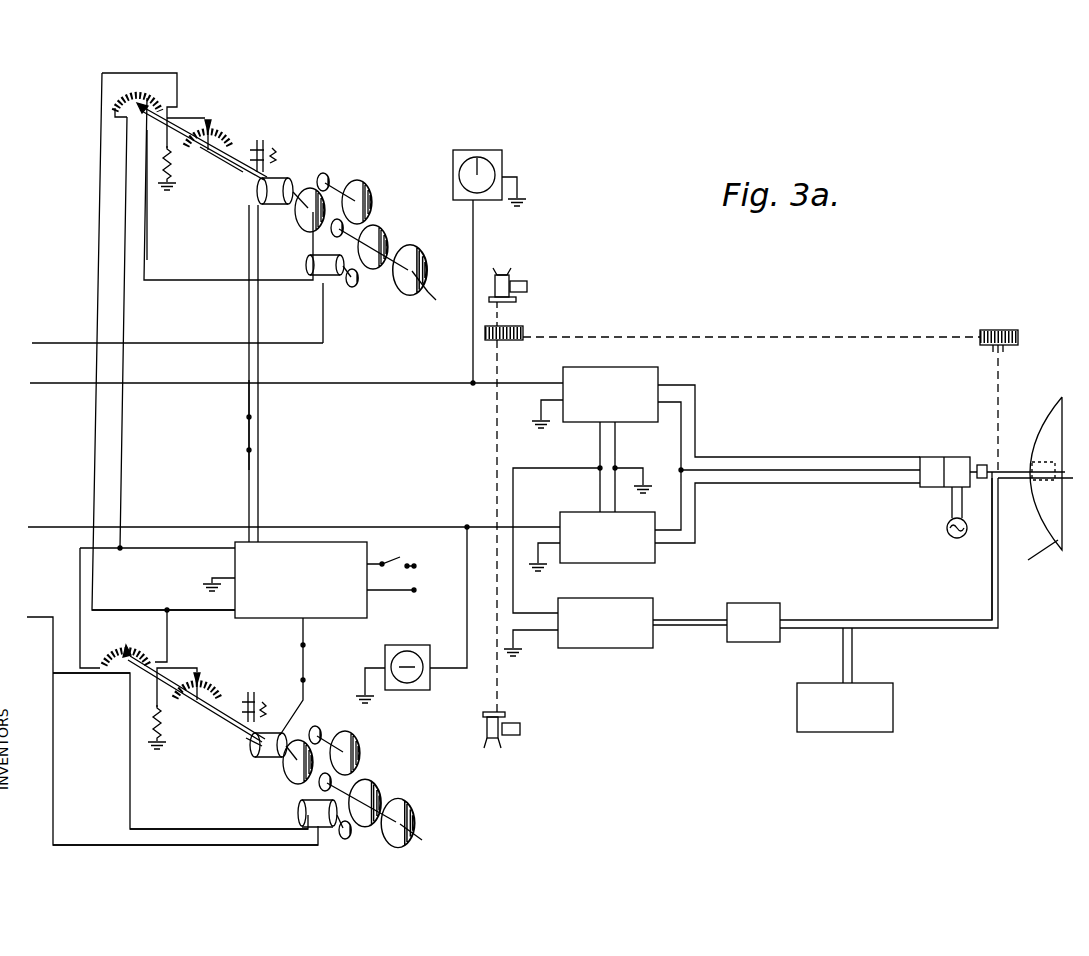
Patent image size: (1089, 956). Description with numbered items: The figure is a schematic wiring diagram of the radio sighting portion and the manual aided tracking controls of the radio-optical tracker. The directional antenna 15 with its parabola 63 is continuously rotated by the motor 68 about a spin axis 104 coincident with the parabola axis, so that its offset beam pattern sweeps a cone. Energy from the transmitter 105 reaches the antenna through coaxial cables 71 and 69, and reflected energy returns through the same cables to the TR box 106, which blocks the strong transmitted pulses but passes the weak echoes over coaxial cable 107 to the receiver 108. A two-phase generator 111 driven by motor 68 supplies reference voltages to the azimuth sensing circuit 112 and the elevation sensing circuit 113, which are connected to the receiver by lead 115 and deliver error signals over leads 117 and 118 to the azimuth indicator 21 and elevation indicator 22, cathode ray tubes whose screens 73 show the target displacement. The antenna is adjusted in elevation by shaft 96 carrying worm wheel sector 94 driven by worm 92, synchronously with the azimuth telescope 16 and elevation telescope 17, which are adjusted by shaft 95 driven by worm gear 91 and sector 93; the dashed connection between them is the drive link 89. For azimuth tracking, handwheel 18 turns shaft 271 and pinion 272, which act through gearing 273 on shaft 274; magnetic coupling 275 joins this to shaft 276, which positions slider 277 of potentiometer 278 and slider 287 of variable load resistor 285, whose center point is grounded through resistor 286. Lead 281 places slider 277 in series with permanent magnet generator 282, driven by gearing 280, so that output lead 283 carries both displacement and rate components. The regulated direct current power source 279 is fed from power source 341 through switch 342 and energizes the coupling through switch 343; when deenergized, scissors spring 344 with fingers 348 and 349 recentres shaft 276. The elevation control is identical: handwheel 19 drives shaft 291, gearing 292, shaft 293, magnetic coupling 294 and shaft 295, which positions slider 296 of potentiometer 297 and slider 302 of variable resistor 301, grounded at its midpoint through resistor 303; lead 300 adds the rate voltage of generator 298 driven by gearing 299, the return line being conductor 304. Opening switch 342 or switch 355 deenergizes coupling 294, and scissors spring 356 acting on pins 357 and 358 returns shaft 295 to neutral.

The potentiometer 278 is at (114, 106).
The potentiometer slider 277 is at (138, 106).
The variable resistor 285 is at (208, 124).
The slider 287 is at (212, 135).
The projecting finger 349 is at (259, 140).
The projecting finger 348 is at (266, 150).
The magnetic coupling 275 is at (282, 180).
The shaft 274 is at (312, 188).
The gearing 273 is at (352, 190).
The pinion 272 is at (373, 225).
The shaft 271 is at (405, 246).
The resistor 286 is at (175, 162).
The shaft 276 is at (244, 172).
The scissors spring 344 is at (253, 208).
The lead 281 is at (148, 236).
The permanent magnet generator 282 is at (310, 262).
The gearing 280 is at (375, 280).
The azimuth tracking handwheel 18 is at (428, 300).
The lead 283 is at (60, 343).
The switch 343 is at (247, 430).
The lead 117 is at (438, 385).
The lead 118 is at (430, 527).
The switch 342 is at (398, 555).
The source of power 341 is at (418, 578).
The regulated direct current power source 279 is at (355, 618).
The switch 355 is at (305, 660).
The screen 73 is at (480, 170).
The azimuth indicator 21 is at (503, 163).
The elevation indicator 22 is at (426, 692).
The azimuth telescope 16 is at (522, 284).
The shaft 95 is at (503, 316).
The sector 93 is at (525, 331).
The worm gear 91 is at (506, 343).
The drive shaft 89 is at (745, 336).
The worm wheel sector 94 is at (996, 330).
The worm 92 is at (1015, 332).
The shaft 96 is at (996, 380).
The azimuth sensing circuit 112 is at (660, 375).
The lead 115 is at (575, 470).
The elevation sensing circuit 113 is at (640, 565).
The two-phase generator 111 is at (926, 457).
The motor 68 is at (950, 457).
The directional antenna 15 is at (1040, 462).
The parabola 63 is at (1050, 412).
The coaxial cable 69 is at (1002, 500).
The spin axis 104 is at (1043, 559).
The coaxial cable 107 is at (700, 618).
The TR box 106 is at (775, 603).
The receiver 108 is at (643, 650).
The transmitter 105 is at (875, 733).
The coaxial cable 71 is at (958, 630).
The elevation telescope 17 is at (512, 738).
The potentiometer 297 is at (116, 642).
The slider 296 is at (60, 673).
The variable resistor 301 is at (200, 674).
The slider 302 is at (212, 692).
The pin 358 is at (249, 700).
The pin 357 is at (256, 712).
The resistor 303 is at (155, 722).
The shaft 295 is at (220, 718).
The scissors spring 356 is at (250, 745).
The magnetic coupling 294 is at (262, 760).
The shaft 293 is at (300, 740).
The gearing 292 is at (350, 728).
The shaft 291 is at (370, 785).
The permanent magnet generator 298 is at (300, 812).
The gearing 299 is at (348, 835).
The lead 300 is at (187, 829).
The conductor 304 is at (78, 843).
The elevation handwheel 19 is at (410, 835).